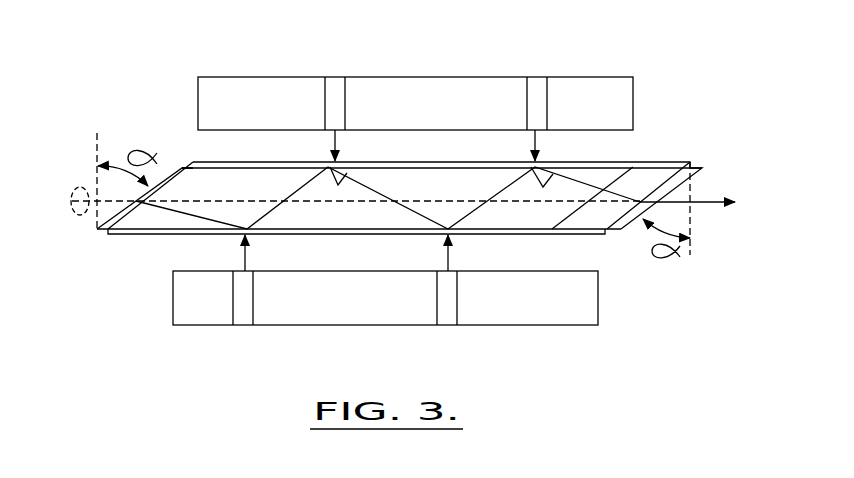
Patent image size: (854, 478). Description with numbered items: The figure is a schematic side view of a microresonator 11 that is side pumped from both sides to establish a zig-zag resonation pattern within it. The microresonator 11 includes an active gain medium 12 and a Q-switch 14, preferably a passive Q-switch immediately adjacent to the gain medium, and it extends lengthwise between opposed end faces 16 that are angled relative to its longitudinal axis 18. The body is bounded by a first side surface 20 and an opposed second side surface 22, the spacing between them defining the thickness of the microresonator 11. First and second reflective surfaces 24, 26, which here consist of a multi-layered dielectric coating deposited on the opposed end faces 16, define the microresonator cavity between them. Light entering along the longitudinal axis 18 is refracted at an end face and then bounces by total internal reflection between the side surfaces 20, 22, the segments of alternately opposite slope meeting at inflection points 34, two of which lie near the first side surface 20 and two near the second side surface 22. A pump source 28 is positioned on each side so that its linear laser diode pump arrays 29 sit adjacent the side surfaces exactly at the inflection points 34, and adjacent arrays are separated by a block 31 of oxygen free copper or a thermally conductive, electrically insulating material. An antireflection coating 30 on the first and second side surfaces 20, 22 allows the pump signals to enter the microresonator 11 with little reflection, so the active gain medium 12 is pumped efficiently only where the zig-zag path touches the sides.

The microresonator 11 is at (413, 202).
The active gain medium 12 is at (399, 217).
The Q-switch 14 is at (590, 226).
The opposed end faces 16 is at (140, 201).
The longitudinal axis 18 is at (80, 187).
The first side surface 20 is at (417, 169).
The second side surface 22 is at (323, 228).
The first reflective surface 24 is at (177, 172).
The second reflective surface 26 is at (672, 192).
The pump source 28 is at (419, 195).
The linear laser diode pump arrays 29 is at (337, 88).
The antireflection coating 30 is at (275, 163).
The block 31 is at (432, 90).
The inflection points 34 is at (347, 173).